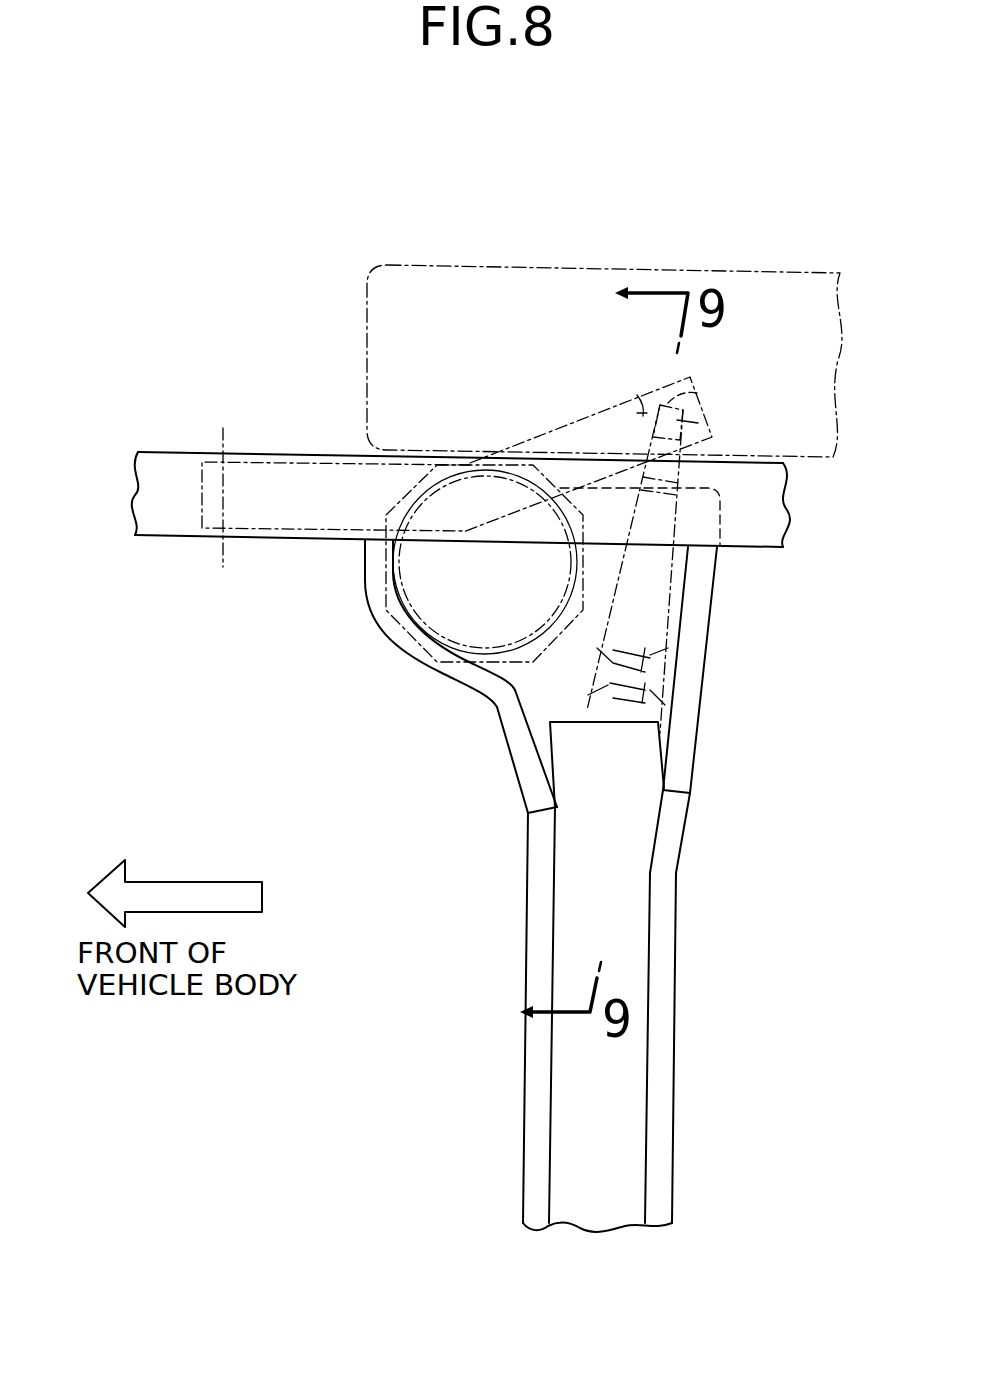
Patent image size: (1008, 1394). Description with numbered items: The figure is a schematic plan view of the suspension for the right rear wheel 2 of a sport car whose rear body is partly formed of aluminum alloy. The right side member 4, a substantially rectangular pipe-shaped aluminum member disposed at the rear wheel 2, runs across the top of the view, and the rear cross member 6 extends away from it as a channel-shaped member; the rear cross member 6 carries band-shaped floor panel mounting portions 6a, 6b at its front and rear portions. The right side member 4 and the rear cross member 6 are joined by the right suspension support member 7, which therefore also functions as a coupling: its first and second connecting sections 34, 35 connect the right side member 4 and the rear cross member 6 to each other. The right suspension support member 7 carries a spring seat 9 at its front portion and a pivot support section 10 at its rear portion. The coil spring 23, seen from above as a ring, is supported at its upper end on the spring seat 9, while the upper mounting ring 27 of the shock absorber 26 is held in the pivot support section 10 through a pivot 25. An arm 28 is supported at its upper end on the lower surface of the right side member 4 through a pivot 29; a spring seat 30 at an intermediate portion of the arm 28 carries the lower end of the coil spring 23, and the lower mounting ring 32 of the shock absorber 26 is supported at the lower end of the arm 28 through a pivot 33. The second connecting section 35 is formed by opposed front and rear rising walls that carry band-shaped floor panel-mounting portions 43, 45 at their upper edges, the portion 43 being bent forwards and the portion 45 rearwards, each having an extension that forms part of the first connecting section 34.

The right rear wheel 2 is at (488, 266).
The right side member 4 is at (150, 462).
The rear cross member 6 is at (684, 1119).
The floor panel mounting portion 6a is at (540, 1095).
The floor panel mounting portion 6b is at (663, 990).
The right suspension support member 7 is at (714, 679).
The spring seat 9 is at (438, 627).
The pivot support section 10 is at (633, 717).
The coil spring 23 is at (410, 598).
The pivot 25 is at (660, 633).
The shock absorber 26 is at (660, 578).
The upper mounting ring 27 is at (622, 700).
The arm 28 is at (312, 455).
The pivot 29 is at (222, 560).
The spring seat 30 is at (387, 600).
The lower mounting ring 32 is at (700, 392).
The pivot 33 is at (640, 410).
The first connecting section 34 is at (728, 509).
The second connecting section 35 is at (519, 803).
The floor panel-mounting portion 43 is at (497, 707).
The floor panel-mounting portion 45 is at (685, 743).